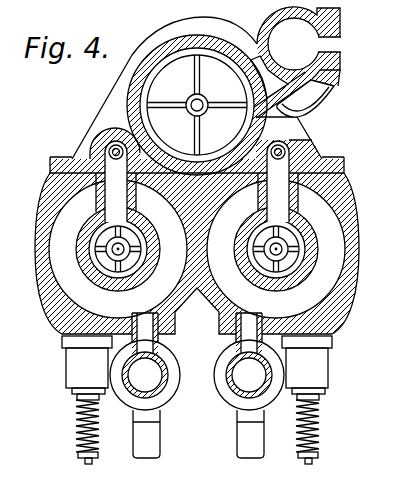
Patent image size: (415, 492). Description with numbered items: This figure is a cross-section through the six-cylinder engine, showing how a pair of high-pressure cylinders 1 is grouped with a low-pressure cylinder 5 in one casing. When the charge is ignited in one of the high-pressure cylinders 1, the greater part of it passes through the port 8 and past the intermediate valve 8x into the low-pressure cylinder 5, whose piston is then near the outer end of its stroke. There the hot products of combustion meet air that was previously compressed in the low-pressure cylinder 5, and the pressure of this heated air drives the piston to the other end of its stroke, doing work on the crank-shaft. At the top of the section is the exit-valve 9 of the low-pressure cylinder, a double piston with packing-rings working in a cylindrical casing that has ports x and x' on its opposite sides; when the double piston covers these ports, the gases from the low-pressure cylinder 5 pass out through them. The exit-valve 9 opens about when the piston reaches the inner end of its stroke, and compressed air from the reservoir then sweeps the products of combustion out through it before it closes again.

The high-pressure cylinder 1 is at (197, 246).
The low-pressure cylinder 5 is at (158, 50).
The port 8 is at (197, 181).
The intermediate valve 8x is at (323, 132).
The exit-valve 9 is at (298, 43).
The port x is at (292, 86).
The port x' is at (343, 43).